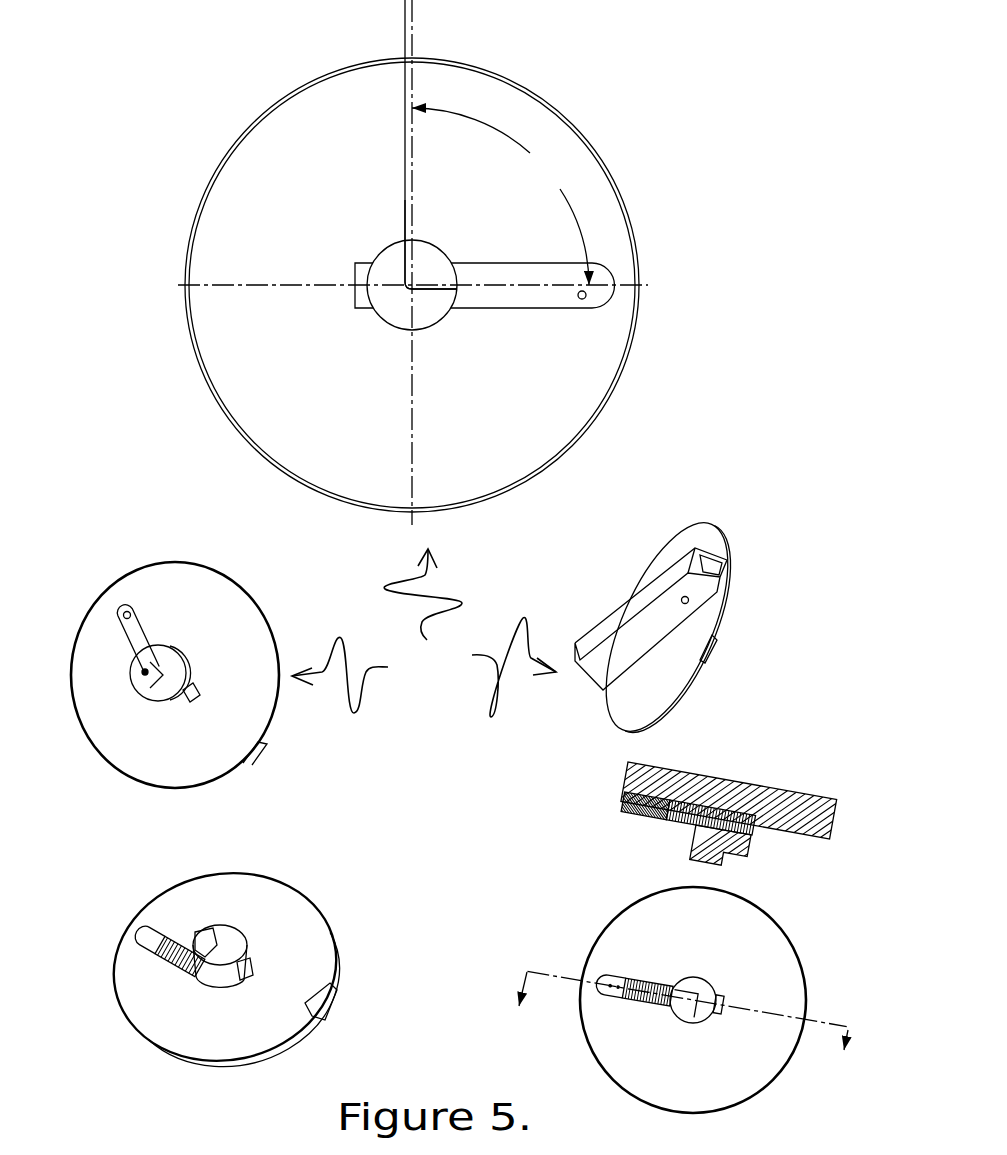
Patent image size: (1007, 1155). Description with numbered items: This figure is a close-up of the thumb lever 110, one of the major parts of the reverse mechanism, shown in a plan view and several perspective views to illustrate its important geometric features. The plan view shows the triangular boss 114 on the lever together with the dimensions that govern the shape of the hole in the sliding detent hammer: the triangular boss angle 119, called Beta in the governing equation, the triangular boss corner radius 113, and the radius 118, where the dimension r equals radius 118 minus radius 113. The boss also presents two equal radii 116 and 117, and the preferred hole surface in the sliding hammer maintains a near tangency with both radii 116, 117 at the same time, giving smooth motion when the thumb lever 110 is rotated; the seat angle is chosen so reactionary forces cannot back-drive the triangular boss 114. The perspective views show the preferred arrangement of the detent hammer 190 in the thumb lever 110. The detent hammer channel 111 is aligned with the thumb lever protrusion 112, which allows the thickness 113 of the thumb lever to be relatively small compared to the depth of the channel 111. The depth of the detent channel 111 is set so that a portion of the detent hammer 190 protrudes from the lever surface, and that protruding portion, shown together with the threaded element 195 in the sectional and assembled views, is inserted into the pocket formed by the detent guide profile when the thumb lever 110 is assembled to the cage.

The thumb lever 110 is at (607, 923).
The detent hammer channel 111 is at (586, 297).
The thumb lever protrusion 112 is at (688, 602).
The thickness of the thumb lever 113 is at (470, 18).
The triangular boss 114 is at (146, 670).
The radius 116 is at (458, 289).
The radius 117 is at (406, 242).
The radius 118 is at (440, 318).
The triangular boss angle 119 is at (500, 196).
The detent hammer 190 is at (634, 815).
The threaded fastener 195 is at (683, 822).